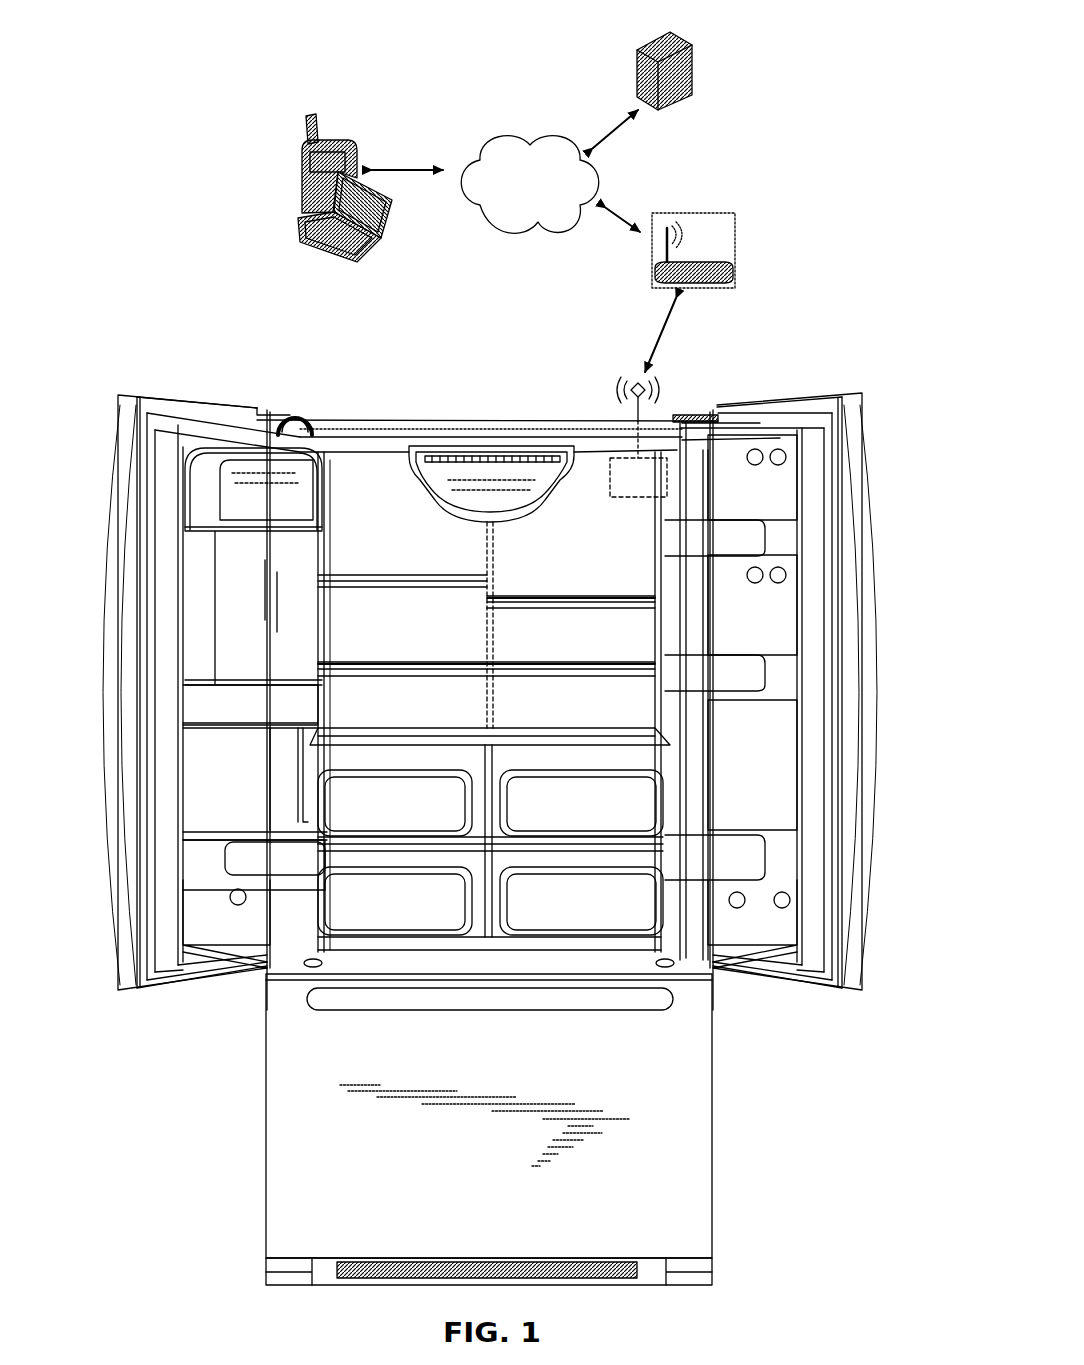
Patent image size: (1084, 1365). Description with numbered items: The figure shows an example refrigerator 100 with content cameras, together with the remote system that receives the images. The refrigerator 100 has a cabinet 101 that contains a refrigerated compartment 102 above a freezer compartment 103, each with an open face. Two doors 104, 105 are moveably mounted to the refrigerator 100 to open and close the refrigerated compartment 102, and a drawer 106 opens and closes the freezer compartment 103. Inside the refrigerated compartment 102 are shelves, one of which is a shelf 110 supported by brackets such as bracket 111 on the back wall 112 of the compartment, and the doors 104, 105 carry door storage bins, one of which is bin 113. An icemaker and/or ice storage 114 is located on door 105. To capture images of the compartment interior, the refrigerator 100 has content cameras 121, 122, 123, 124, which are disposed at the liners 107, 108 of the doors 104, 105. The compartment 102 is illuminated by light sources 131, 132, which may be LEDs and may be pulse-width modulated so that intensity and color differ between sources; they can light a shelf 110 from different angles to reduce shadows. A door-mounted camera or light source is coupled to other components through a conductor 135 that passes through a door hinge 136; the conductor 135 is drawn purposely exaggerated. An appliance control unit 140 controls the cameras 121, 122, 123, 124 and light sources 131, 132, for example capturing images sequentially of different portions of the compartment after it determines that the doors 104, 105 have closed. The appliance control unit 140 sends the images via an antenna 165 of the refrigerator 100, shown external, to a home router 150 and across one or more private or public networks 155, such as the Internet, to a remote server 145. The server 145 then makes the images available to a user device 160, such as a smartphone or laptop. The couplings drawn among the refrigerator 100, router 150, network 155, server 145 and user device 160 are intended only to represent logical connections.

The refrigerator 100 is at (752, 355).
The cabinet 101 is at (405, 418).
The refrigerated compartment 102 is at (608, 453).
The freezer compartment 103 is at (720, 1036).
The door 104 is at (850, 436).
The door 105 is at (130, 433).
The drawer 106 is at (690, 1080).
The liner 107 is at (757, 782).
The liner 108 is at (237, 786).
The shelf 110 is at (540, 662).
The bracket 111 is at (540, 604).
The back wall 112 is at (358, 468).
The door storage bin 113 is at (775, 868).
The icemaker and/or ice storage 114 is at (238, 635).
The content camera 121 is at (233, 905).
The content camera 122 is at (739, 909).
The content camera 123 is at (784, 907).
The content camera 124 is at (780, 464).
The light source 131 is at (757, 568).
The light source 132 is at (756, 449).
The conductor 135 is at (290, 415).
The door hinge 136 is at (300, 412).
The appliance control unit 140 is at (638, 477).
The remote server 145 is at (672, 40).
The home router 150 is at (705, 268).
The network 155 is at (530, 185).
The user device 160 is at (352, 125).
The antenna 165 is at (652, 392).